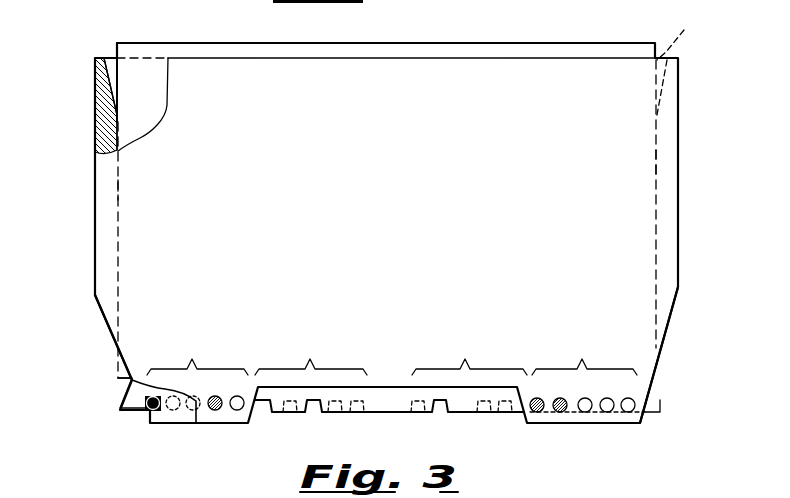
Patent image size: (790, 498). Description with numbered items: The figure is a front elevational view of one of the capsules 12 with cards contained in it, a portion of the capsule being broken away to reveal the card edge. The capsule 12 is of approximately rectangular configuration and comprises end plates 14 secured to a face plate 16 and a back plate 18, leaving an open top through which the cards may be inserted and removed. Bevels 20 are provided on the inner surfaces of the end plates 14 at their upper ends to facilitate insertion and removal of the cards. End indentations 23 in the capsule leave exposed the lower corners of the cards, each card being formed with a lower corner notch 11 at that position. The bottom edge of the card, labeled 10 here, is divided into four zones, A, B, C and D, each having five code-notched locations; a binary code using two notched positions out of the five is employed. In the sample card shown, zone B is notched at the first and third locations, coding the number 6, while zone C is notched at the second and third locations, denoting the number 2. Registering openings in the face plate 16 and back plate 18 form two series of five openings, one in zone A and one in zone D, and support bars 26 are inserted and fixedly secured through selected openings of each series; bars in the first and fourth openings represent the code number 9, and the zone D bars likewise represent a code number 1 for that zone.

The connector housing 10 is at (152, 43).
The lower corner notch 11 is at (122, 380).
The capsule 12 is at (95, 97).
The end plates 14 is at (118, 193).
The face plate 16 is at (140, 147).
The back plate 18 is at (108, 56).
The bevels 20 is at (102, 67).
The end indentations 23 is at (99, 306).
The support bars 26 is at (150, 412).
The code number 9 is at (197, 391).
The code number 6 is at (311, 390).
The code number 2 is at (469, 390).
The connector section D 1 is at (584, 391).